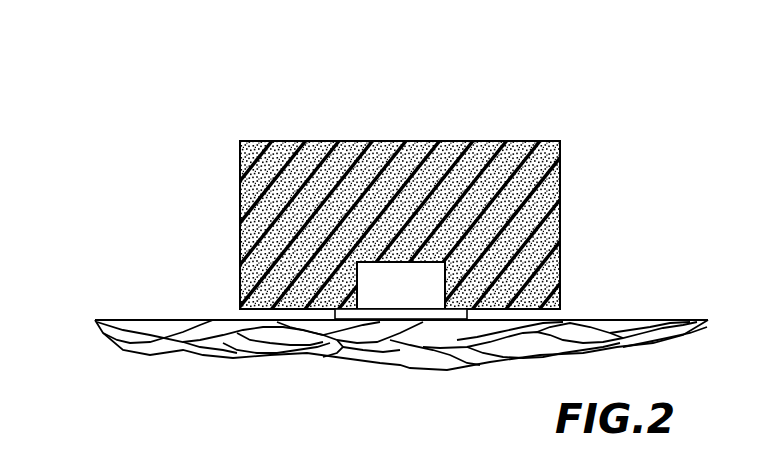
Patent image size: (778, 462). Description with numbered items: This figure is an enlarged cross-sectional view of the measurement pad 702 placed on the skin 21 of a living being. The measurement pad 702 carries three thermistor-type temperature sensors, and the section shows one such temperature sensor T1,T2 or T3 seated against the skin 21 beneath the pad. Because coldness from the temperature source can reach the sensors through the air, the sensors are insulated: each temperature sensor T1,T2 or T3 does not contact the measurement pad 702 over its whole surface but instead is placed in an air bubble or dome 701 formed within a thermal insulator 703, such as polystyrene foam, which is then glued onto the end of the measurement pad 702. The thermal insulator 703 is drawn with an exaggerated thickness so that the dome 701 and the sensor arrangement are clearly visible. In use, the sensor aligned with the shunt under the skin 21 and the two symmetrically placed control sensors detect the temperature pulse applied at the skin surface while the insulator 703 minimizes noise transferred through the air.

The measurement pad 702 is at (339, 247).
The thermal insulator 703 is at (507, 150).
The air bubble or dome 701 is at (430, 275).
The temperature sensor T1,T2 or T3 is at (441, 322).
The skin 21 is at (171, 326).